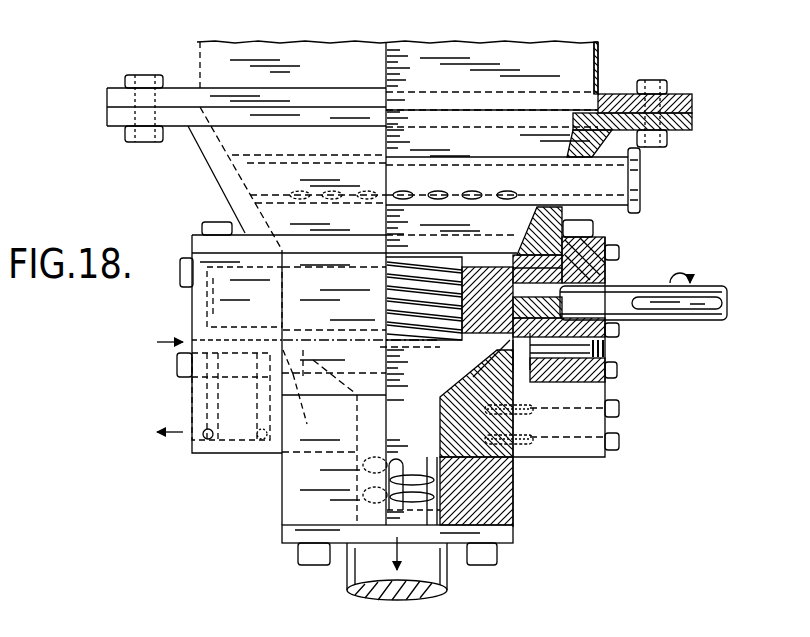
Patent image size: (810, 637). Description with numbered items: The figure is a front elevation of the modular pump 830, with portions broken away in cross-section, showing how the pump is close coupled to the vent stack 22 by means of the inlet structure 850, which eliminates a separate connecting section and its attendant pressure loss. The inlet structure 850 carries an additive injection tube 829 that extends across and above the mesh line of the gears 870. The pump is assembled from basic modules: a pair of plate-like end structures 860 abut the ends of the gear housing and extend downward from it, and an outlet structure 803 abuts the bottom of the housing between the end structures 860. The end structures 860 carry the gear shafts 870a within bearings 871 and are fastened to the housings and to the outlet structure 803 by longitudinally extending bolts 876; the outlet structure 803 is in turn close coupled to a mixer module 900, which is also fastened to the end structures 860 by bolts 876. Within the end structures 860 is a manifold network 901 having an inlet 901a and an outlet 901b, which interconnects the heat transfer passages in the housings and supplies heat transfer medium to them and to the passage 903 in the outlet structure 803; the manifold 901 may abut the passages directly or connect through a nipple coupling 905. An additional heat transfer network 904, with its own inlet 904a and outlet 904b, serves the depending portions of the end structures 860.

The vent stack 22 is at (600, 50).
The modular pump 830 is at (178, 66).
The inlet structure 850 is at (578, 150).
The additive injection tube 829 is at (638, 178).
The gears 870 is at (428, 272).
The bearings 871 is at (603, 281).
The gear shafts 870a is at (697, 313).
The bolts 876 is at (607, 253).
The end structures 860 is at (194, 314).
The manifold network 901 is at (515, 358).
The inlet 901a is at (607, 352).
The outlet 901b is at (177, 368).
The passage 903 is at (510, 373).
The outlet structure 803 is at (453, 394).
The mixer module 900 is at (497, 494).
The additional heat transfer network 904 is at (207, 400).
The inlet 904a is at (194, 340).
The outlet 904b is at (192, 438).
The nipple coupling 905 is at (311, 399).